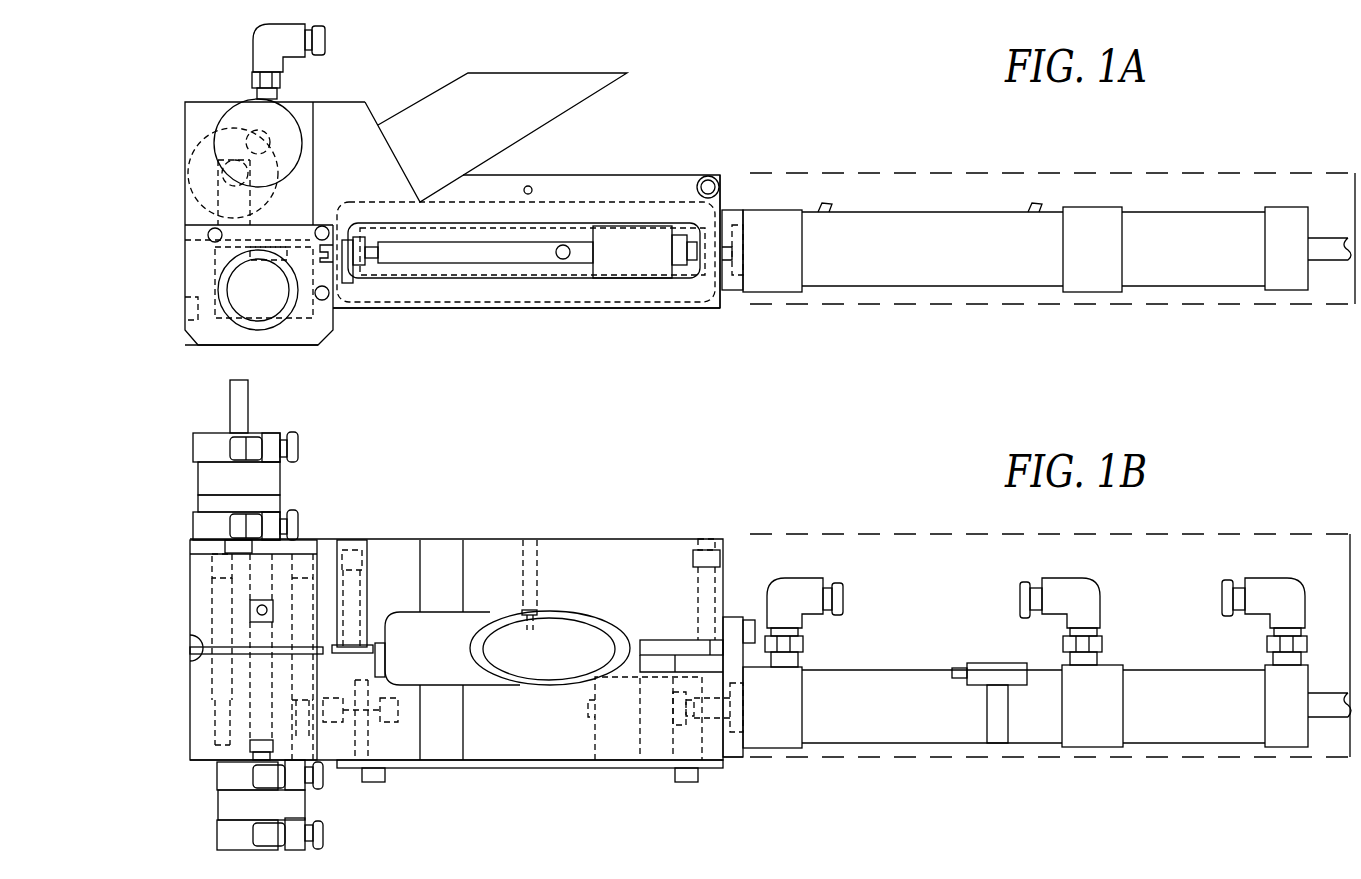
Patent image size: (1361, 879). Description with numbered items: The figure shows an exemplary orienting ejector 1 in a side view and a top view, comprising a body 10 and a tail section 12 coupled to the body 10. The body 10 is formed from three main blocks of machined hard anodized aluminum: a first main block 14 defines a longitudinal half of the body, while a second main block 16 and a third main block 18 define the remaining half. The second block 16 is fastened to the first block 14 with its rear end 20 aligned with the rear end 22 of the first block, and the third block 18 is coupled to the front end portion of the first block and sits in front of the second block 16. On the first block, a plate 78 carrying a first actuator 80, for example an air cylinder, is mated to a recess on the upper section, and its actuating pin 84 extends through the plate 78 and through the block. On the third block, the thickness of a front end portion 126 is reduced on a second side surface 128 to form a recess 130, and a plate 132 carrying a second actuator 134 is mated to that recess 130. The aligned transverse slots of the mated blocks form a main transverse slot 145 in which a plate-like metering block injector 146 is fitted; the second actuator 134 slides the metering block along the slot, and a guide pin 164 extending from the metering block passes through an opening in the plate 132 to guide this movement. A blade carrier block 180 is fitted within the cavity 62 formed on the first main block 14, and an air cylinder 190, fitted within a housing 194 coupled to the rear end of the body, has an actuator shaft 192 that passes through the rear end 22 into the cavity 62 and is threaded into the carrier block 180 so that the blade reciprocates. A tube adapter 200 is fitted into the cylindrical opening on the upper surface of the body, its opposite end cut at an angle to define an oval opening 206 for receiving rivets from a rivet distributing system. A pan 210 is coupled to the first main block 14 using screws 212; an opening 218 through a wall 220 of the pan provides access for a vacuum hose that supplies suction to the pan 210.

In FIG. 1A, the orienting ejector 1 is at (762, 318).
In FIG. 1B, the orienting ejector 1 is at (755, 788).
In FIG. 1A, the body 10 is at (490, 318).
In FIG. 1B, the body 10 is at (520, 783).
In FIG. 1A, the tail section 12 is at (985, 306).
In FIG. 1B, the tail section 12 is at (995, 757).
In FIG. 1A, the first main block 14 is at (605, 187).
In FIG. 1B, the first main block 14 is at (553, 740).
In FIG. 1B, the second main block 16 is at (592, 556).
In FIG. 1B, the third main block 18 is at (330, 607).
In FIG. 1B, the rear end of the second block 20 is at (727, 555).
In FIG. 1B, the rear end of the first block 22 is at (730, 676).
In FIG. 1A, the cavity 62 is at (577, 265).
In FIG. 1B, the plate 78 is at (205, 757).
In FIG. 1B, the first actuator 80 is at (272, 803).
In FIG. 1B, the actuating pin 84 is at (260, 713).
In FIG. 1B, the front end portion of the third main block 126 is at (200, 585).
In FIG. 1B, the second side surface of the third block 128 is at (200, 557).
In FIG. 1B, the recess 130 is at (316, 560).
In FIG. 1B, the plate 132 is at (198, 545).
In FIG. 1B, the second actuator 134 is at (213, 445).
In FIG. 1B, the main transverse slot 145 is at (212, 622).
In FIG. 1B, the metering block injector 146 is at (220, 605).
In FIG. 1B, the guide pin 164 is at (220, 555).
In FIG. 1A, the blade carrier block 180 is at (637, 257).
In FIG. 1B, the blade carrier block 180 is at (637, 727).
In FIG. 1A, the air cylinder 190 is at (912, 268).
In FIG. 1B, the air cylinder 190 is at (923, 715).
In FIG. 1A, the actuator shaft 192 is at (697, 257).
In FIG. 1B, the actuator shaft 192 is at (715, 710).
In FIG. 1A, the housing 194 is at (1088, 305).
In FIG. 1B, the housing 194 is at (1082, 757).
In FIG. 1A, the tube adapter 200 is at (435, 103).
In FIG. 1B, the tube adapter 200 is at (432, 640).
In FIG. 1B, the oval opening 206 is at (532, 665).
In FIG. 1A, the pan 210 is at (205, 268).
In FIG. 1A, the screws 212 is at (322, 233).
In FIG. 1A, the opening 218 is at (255, 290).
In FIG. 1A, the wall 220 is at (208, 313).